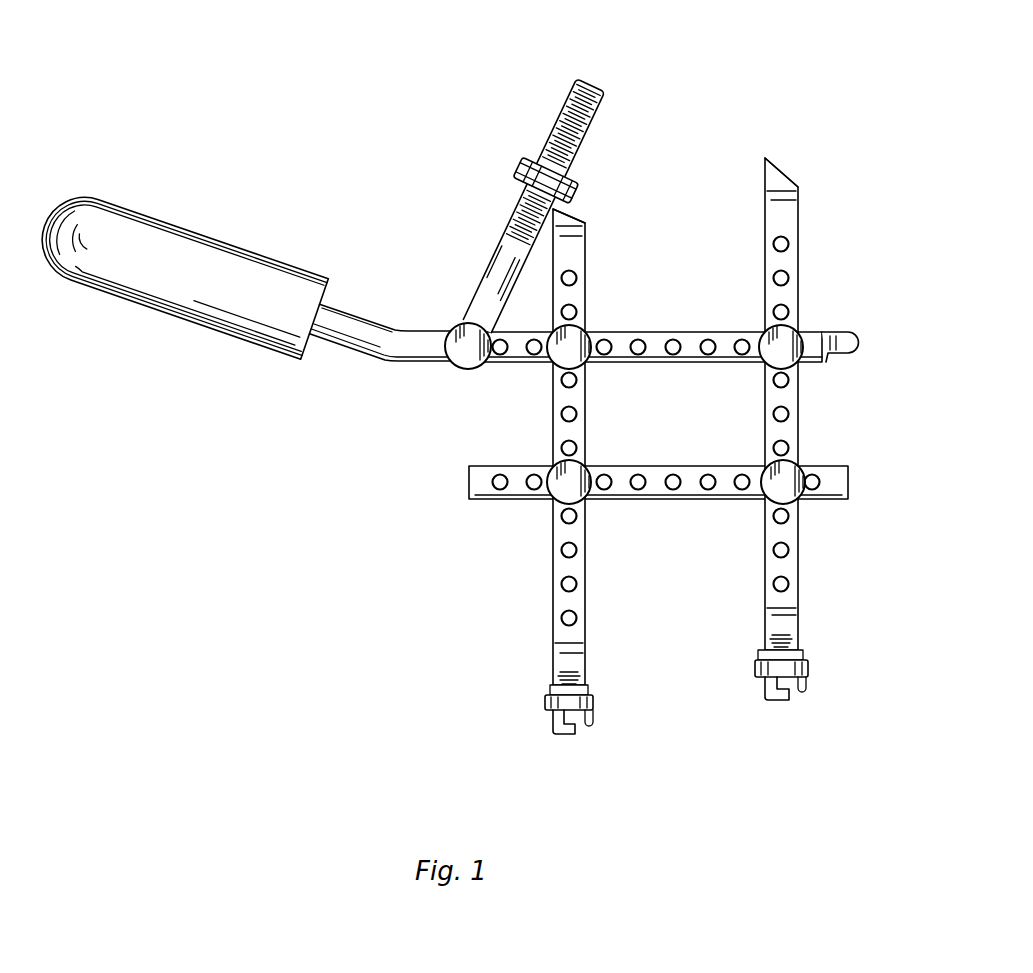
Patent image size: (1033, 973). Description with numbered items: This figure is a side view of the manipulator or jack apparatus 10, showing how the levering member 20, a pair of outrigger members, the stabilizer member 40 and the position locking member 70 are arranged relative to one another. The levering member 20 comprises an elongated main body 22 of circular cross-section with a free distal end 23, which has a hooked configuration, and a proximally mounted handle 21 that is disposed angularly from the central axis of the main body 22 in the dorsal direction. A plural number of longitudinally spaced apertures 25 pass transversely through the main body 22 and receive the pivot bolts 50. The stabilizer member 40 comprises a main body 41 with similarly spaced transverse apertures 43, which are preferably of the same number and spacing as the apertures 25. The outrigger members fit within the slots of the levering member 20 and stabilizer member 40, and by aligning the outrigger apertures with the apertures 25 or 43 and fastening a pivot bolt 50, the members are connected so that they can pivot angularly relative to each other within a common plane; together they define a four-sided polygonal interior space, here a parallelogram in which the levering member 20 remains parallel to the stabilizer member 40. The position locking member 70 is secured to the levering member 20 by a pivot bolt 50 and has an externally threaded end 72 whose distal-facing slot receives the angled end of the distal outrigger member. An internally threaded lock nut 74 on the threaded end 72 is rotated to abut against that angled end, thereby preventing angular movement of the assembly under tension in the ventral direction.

The jack apparatus 10 is at (394, 163).
The levering member 20 is at (342, 372).
The handle 21 is at (182, 228).
The main body 22 is at (507, 361).
The free distal end 23 is at (856, 331).
The apertures 25 is at (628, 331).
The stabilizer member 40 is at (873, 466).
The main body 41 is at (697, 466).
The apertures 43 is at (655, 530).
The pivot bolts 50 is at (450, 370).
The position locking member 70 is at (630, 113).
The externally threaded end 72 is at (533, 206).
The lock nut 74 is at (545, 180).